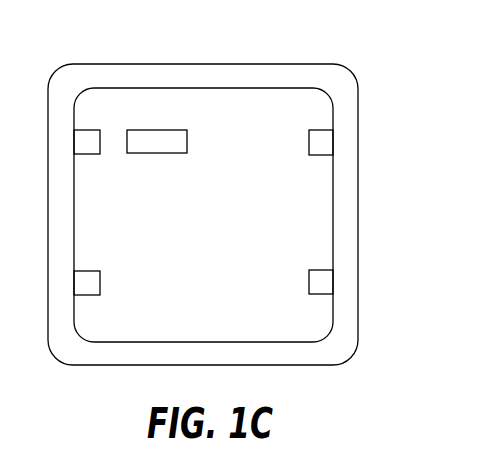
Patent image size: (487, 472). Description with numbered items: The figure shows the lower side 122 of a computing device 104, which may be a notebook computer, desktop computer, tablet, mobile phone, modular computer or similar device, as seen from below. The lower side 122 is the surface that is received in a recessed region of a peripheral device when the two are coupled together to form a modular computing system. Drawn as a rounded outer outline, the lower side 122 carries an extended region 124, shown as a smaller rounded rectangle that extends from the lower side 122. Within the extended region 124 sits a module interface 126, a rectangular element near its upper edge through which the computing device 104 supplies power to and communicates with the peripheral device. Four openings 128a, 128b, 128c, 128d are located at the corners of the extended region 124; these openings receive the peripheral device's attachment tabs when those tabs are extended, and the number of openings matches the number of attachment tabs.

The computing device 104 is at (297, 44).
The lower side 122 is at (365, 58).
The extended region 124 is at (335, 108).
The module interface 126 is at (157, 130).
The opening 128a is at (309, 130).
The opening 128b is at (309, 280).
The opening 128c is at (87, 155).
The opening 128d is at (100, 293).